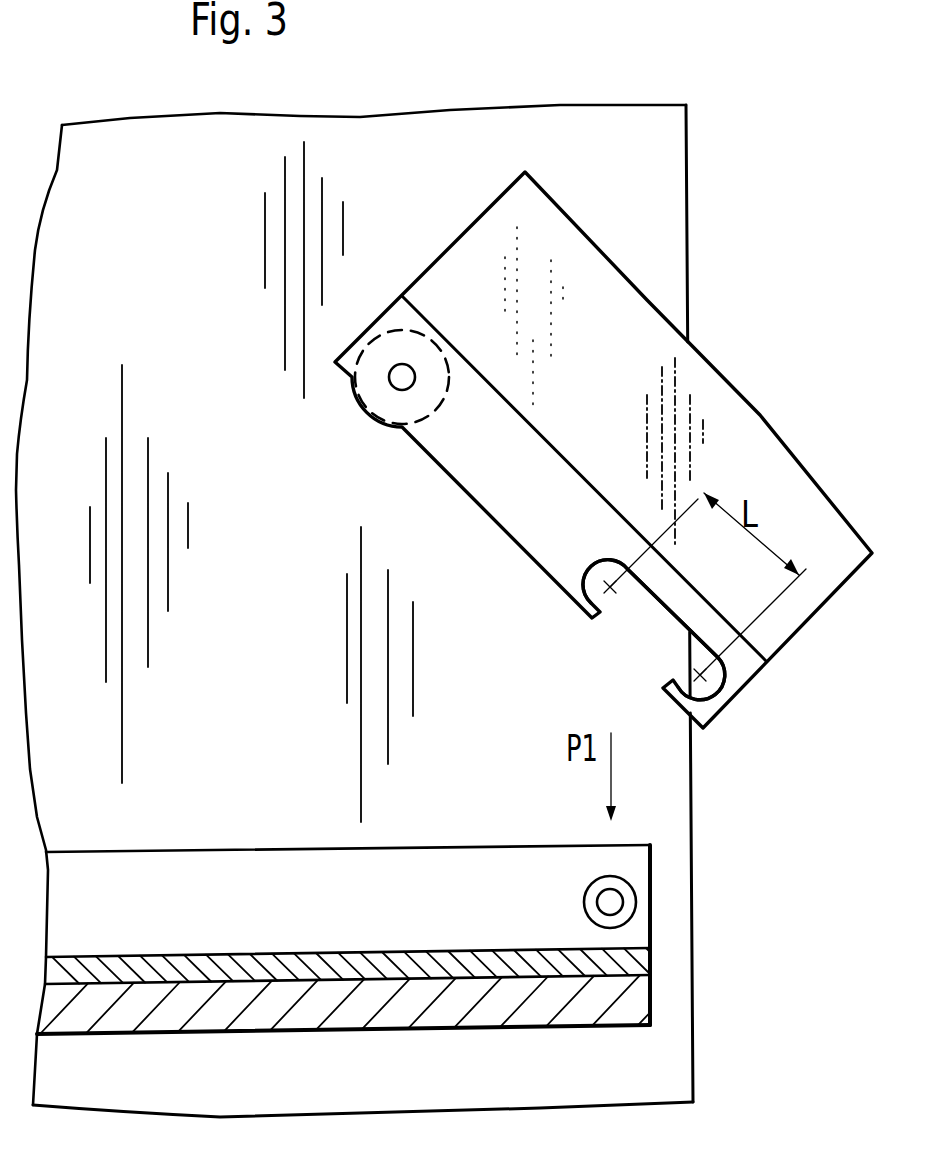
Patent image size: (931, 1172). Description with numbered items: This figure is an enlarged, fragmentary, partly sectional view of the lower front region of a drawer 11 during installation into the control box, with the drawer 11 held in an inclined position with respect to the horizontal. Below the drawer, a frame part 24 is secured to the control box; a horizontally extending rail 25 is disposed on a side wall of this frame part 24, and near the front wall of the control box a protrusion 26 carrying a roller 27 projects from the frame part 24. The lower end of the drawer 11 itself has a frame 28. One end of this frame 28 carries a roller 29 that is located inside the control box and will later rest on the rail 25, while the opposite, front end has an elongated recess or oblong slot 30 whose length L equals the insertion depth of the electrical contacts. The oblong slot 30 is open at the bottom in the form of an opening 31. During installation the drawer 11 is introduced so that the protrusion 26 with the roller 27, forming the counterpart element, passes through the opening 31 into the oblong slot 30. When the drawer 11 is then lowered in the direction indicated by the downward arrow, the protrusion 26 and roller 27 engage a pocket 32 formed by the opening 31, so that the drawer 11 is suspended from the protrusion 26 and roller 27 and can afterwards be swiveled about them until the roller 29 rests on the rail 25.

The drawer 11 is at (727, 418).
The frame part 24 is at (632, 1010).
The rail 25 is at (627, 967).
The protrusion 26 is at (613, 897).
The roller 27 is at (622, 917).
The frame 28 is at (747, 663).
The roller 29 is at (367, 412).
The oblong slot 30 is at (712, 681).
The opening 31 is at (633, 651).
The pocket 32 is at (584, 588).